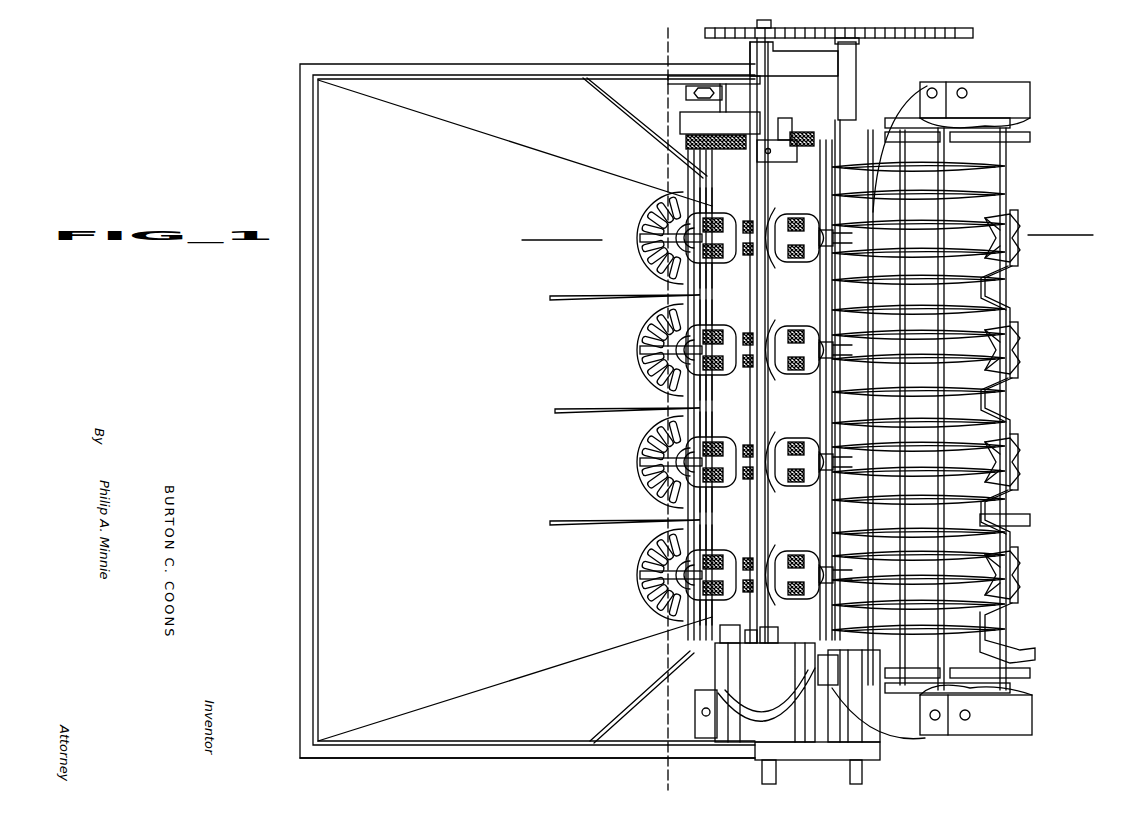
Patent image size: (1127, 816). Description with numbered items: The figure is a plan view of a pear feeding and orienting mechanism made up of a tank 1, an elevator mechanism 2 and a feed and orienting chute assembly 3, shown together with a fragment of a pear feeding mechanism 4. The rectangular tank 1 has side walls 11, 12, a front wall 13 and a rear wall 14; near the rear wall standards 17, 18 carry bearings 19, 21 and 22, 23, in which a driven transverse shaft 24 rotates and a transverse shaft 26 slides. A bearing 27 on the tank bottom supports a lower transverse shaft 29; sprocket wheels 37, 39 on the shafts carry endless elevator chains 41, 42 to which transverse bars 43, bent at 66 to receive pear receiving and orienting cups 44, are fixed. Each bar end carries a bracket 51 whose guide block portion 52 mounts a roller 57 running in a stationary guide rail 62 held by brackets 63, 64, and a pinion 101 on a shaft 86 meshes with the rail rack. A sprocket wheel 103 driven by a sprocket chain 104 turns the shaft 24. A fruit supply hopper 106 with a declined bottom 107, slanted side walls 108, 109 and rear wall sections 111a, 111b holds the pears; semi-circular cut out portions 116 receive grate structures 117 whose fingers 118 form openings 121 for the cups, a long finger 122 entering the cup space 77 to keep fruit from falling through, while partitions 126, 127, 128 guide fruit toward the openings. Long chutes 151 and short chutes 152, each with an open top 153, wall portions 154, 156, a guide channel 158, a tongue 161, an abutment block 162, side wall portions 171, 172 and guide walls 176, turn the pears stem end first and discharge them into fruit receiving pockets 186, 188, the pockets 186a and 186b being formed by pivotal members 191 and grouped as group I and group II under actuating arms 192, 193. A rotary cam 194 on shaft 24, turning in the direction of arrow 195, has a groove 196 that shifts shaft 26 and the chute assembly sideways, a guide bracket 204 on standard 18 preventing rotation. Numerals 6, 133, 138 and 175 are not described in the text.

The tank 1 is at (300, 388).
The elevator mechanism 2 is at (640, 40).
The feed and orienting chute assembly 3 is at (533, 266).
The pear feeding mechanism 4 is at (1040, 648).
The view arrow 6 is at (935, 535).
The side wall 11 is at (560, 72).
The side wall 12 is at (563, 750).
The front wall 13 is at (315, 328).
The rear wall 14 is at (862, 150).
The standard 17 is at (794, 59).
The standard 18 is at (817, 749).
The bearing 19 is at (755, 50).
The bearing 21 is at (848, 46).
The bearing 22 is at (765, 770).
The bearing 23 is at (880, 753).
The transverse shaft 24 is at (763, 120).
The transverse shaft 26 is at (851, 135).
The bearing 27 is at (690, 91).
The transverse shaft 29 is at (718, 665).
The sprocket wheel 37 is at (733, 647).
The sprocket wheel 39 is at (770, 648).
The endless elevator chain 41 is at (690, 165).
The endless elevator chain 42 is at (755, 655).
The transverse bar 43 is at (750, 501).
The pear receiving and orienting cup 44 is at (732, 395).
The bracket 51 is at (690, 142).
The guide block portion 52 is at (802, 134).
The roller 57 is at (778, 138).
The stationary guide rail 62 is at (700, 112).
The bracket 63 is at (680, 80).
The bracket 64 is at (714, 110).
The bent portion 66 is at (750, 351).
The space 77 is at (645, 240).
The shaft 86 is at (660, 540).
The pinion 101 is at (720, 123).
The sprocket wheel 103 is at (770, 28).
The sprocket chain 104 is at (972, 34).
The fruit supply hopper 106 is at (315, 458).
The bottom 107 is at (495, 390).
The side wall 108 is at (552, 134).
The side wall 109 is at (598, 702).
The rear wall section 111a is at (612, 112).
The rear wall section 111b is at (660, 681).
The semi-circular cut out portion 116 is at (650, 215).
The semi-circular grate structure 117 is at (645, 235).
The finger 118 is at (650, 275).
The semi-circular opening 121 is at (650, 205).
The long finger 122 is at (645, 250).
The partition 126 is at (628, 300).
The partition 127 is at (628, 413).
The partition 128 is at (628, 522).
The spacer 133 is at (885, 348).
The arc guide 138 is at (880, 702).
The feed and orienting chute 151 is at (838, 390).
The feed and orienting chute 152 is at (845, 348).
The open top 153 is at (1038, 445).
The wall portion 154 is at (1016, 264).
The wall portion 156 is at (992, 212).
The guide channel 158 is at (885, 233).
The tongue 161 is at (852, 358).
The abutment block 162 is at (855, 402).
The side wall portion 171 is at (1022, 633).
The side wall portion 172 is at (1030, 520).
The arm 175 is at (841, 588).
The guide wall 176 is at (790, 615).
The fruit receiving pocket 186 is at (1016, 222).
The fruit receiving pocket 186a is at (1018, 470).
The fruit receiving pocket 186b is at (1018, 232).
The fruit receiving pocket 188 is at (940, 182).
The pivotally mounted member 191 is at (886, 118).
The actuating arm 192 is at (1015, 518).
The actuating arm 193 is at (1030, 300).
The rotary cam 194 is at (790, 698).
The arrow 195 is at (760, 750).
The groove 196 is at (695, 715).
The guide bracket 204 is at (885, 736).
The group I is at (1030, 480).
The group II is at (1026, 348).